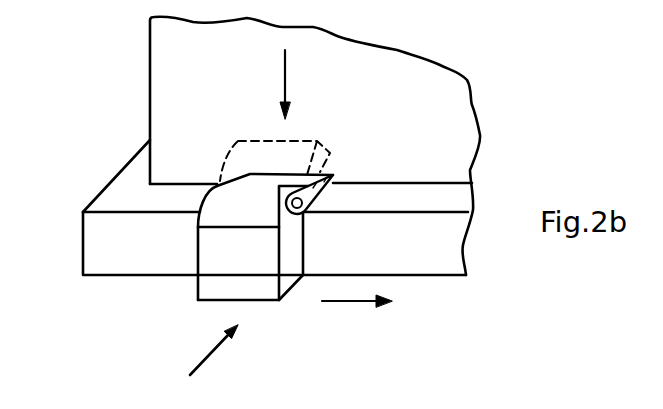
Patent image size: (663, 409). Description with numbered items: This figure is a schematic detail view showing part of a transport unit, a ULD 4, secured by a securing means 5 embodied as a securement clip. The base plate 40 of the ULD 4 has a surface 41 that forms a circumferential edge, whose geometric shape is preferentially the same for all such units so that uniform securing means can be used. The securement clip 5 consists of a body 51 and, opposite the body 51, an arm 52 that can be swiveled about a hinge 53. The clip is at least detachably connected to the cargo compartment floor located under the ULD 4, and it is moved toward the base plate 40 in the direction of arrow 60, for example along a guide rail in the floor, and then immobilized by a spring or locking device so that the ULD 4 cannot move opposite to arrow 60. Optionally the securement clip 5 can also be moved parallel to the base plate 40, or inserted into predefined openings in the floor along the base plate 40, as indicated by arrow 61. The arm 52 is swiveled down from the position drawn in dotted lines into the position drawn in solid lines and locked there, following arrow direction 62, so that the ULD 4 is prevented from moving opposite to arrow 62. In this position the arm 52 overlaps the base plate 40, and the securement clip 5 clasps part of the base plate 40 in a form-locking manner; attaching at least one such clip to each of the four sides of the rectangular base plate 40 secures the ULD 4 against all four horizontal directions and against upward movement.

The ULD 4 is at (168, 67).
The base plate 40 is at (102, 243).
The surface 41 is at (131, 190).
The securing means 5 is at (264, 242).
The body 51 is at (211, 283).
The arm 52 is at (333, 177).
The hinge 53 is at (302, 207).
The arrow direction 60 is at (205, 360).
The arrow 61 is at (343, 303).
The arrow direction 62 is at (288, 68).